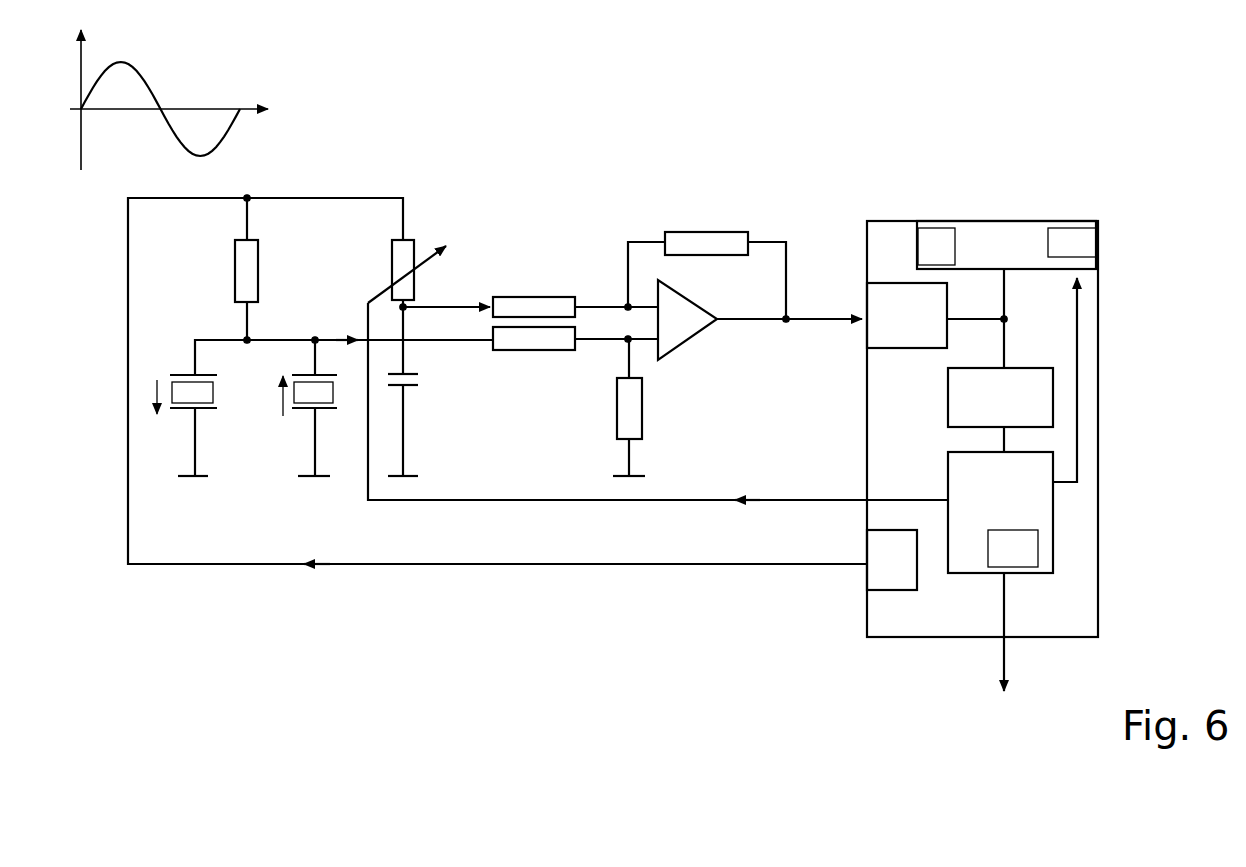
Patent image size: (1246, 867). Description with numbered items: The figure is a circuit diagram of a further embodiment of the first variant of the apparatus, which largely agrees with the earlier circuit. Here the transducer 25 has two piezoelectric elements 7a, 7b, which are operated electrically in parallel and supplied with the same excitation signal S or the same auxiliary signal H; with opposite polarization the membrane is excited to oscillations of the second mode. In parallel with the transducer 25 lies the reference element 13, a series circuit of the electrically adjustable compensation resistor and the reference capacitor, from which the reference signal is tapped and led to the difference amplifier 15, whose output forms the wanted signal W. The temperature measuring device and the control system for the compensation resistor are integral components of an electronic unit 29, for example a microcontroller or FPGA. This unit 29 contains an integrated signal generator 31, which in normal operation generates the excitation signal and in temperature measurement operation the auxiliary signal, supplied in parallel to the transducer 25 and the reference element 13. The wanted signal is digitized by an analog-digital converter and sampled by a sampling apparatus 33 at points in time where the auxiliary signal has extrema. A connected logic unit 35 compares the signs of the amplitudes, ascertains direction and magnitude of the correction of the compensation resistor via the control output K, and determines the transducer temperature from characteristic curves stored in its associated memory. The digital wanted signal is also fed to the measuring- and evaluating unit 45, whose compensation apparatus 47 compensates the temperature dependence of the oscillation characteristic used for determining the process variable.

The transducer 25 is at (186, 330).
The reference element 13 is at (375, 288).
The piezoelectric element 7a is at (208, 392).
The piezoelectric element 7b is at (326, 392).
The difference amplifier 15 is at (699, 348).
The electronic unit 29 is at (1100, 470).
The measuring- and evaluating unit 45 is at (1006, 245).
The compensation apparatus 47 is at (936, 246).
The sampling apparatus 33 is at (1000, 410).
The logic unit 35 is at (1000, 512).
The signal generator 31 is at (892, 560).